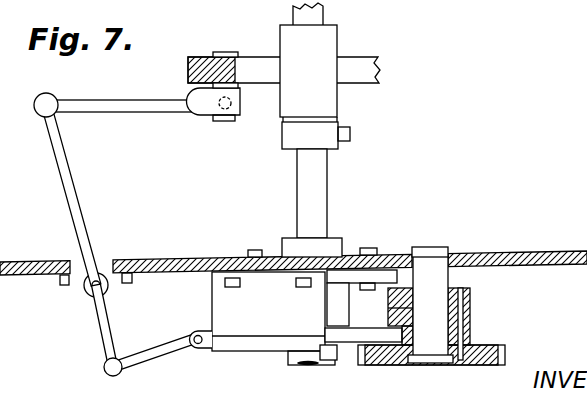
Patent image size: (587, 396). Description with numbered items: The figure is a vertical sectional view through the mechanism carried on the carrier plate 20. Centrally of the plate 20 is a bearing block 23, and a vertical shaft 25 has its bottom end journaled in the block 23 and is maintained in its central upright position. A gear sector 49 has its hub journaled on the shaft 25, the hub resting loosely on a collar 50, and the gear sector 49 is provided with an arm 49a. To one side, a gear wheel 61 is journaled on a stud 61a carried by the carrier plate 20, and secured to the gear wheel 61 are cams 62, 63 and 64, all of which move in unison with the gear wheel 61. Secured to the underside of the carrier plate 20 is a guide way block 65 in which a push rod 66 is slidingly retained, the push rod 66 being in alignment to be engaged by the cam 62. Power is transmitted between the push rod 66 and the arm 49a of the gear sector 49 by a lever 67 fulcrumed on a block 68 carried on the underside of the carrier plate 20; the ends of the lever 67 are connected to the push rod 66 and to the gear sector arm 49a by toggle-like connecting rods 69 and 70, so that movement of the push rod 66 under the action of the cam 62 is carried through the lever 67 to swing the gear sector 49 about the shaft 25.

The carrier plate 20 is at (560, 262).
The bearing block 23 is at (352, 257).
The shaft 25 is at (328, 208).
The gear sector 49 is at (360, 80).
The arm 49a is at (252, 62).
The collar 50 is at (284, 144).
The gear wheel 61 is at (505, 356).
The stud 61a is at (460, 278).
The cam 62 is at (388, 325).
The cam 63 is at (472, 316).
The cam 64 is at (472, 297).
The guide way block 65 is at (255, 333).
The push rod 66 is at (365, 334).
The lever 67 is at (90, 198).
The block 68 is at (84, 292).
The connecting rod 69 is at (165, 352).
The connecting rod 70 is at (142, 113).